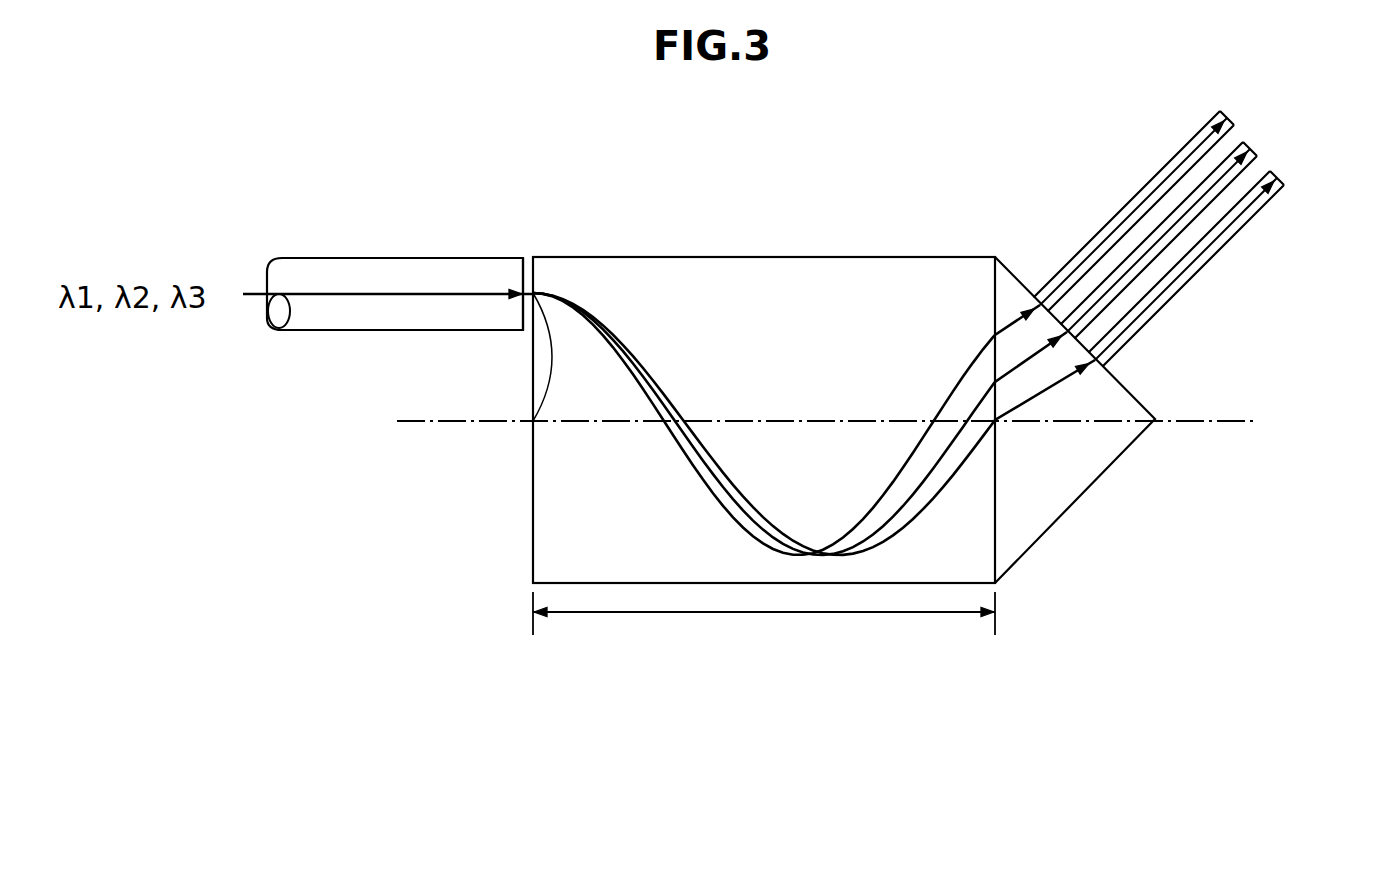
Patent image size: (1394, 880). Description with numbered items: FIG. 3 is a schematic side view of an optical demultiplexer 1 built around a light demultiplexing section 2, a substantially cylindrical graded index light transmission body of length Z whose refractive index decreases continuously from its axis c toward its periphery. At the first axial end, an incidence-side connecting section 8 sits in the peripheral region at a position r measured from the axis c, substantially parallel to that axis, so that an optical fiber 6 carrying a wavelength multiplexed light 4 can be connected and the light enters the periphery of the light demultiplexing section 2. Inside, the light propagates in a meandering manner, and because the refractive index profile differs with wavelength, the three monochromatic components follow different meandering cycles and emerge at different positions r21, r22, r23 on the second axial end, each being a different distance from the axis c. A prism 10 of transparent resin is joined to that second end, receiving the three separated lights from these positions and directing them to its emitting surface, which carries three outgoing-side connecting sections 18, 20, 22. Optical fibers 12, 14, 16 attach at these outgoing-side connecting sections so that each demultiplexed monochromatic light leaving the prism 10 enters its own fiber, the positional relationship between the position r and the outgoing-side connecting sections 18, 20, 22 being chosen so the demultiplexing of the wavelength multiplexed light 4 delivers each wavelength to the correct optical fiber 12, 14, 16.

The optical demultiplexer 1 is at (781, 183).
The light demultiplexing section 2 is at (533, 517).
The wavelength multiplexed light 4 is at (267, 303).
The optical fiber 6 is at (320, 332).
The incidence-side connecting section 8 is at (529, 243).
The prism 10 is at (1130, 405).
The optical fiber 12 is at (1205, 124).
The optical fiber 14 is at (1247, 140).
The optical fiber 16 is at (1285, 188).
The outgoing-side connecting section 18 is at (1038, 298).
The outgoing-side connecting section 20 is at (1080, 331).
The outgoing-side connecting section 22 is at (1104, 360).
The position r21 is at (993, 333).
The position r22 is at (993, 382).
The position r23 is at (993, 422).
The position r is at (551, 357).
The axis c is at (460, 423).
The length Z is at (764, 625).